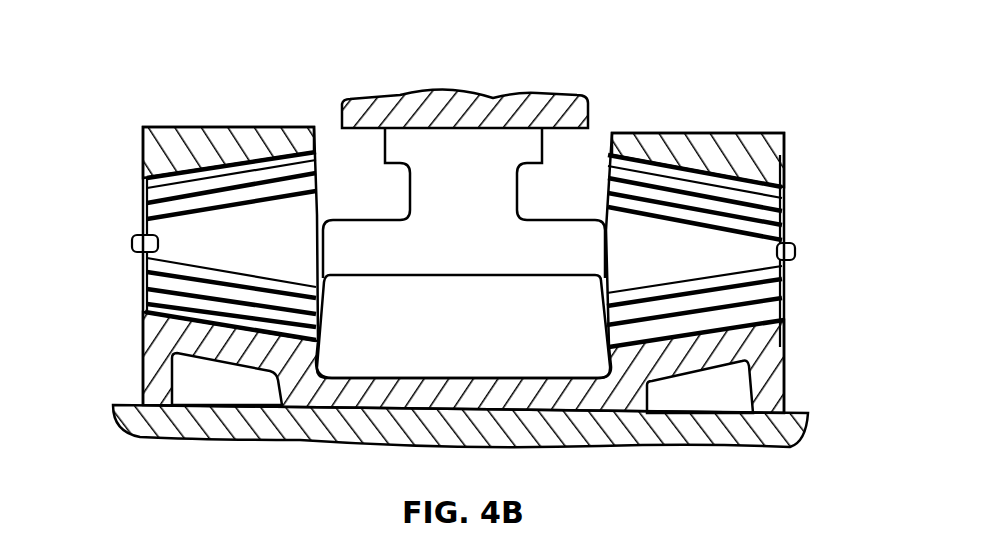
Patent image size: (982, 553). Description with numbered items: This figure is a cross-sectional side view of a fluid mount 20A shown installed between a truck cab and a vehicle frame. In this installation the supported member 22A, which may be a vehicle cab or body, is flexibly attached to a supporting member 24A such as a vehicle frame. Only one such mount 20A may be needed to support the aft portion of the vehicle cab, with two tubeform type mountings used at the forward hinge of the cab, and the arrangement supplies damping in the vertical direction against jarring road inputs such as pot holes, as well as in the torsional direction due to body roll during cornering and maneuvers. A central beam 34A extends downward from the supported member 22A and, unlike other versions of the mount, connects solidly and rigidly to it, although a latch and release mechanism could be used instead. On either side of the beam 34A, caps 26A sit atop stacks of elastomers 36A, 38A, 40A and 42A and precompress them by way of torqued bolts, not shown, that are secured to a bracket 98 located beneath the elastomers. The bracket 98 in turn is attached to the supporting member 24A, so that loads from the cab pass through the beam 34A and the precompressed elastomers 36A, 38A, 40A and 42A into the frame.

The fluid mount 20A is at (806, 198).
The supported member 22A is at (497, 95).
The supporting member 24A is at (641, 446).
The caps 26A is at (230, 127).
The beam 34A is at (500, 190).
The elastomer 36A is at (765, 291).
The elastomer 38A is at (765, 218).
The elastomer 40A is at (150, 271).
The elastomer 42A is at (150, 216).
The bracket 98 is at (787, 372).